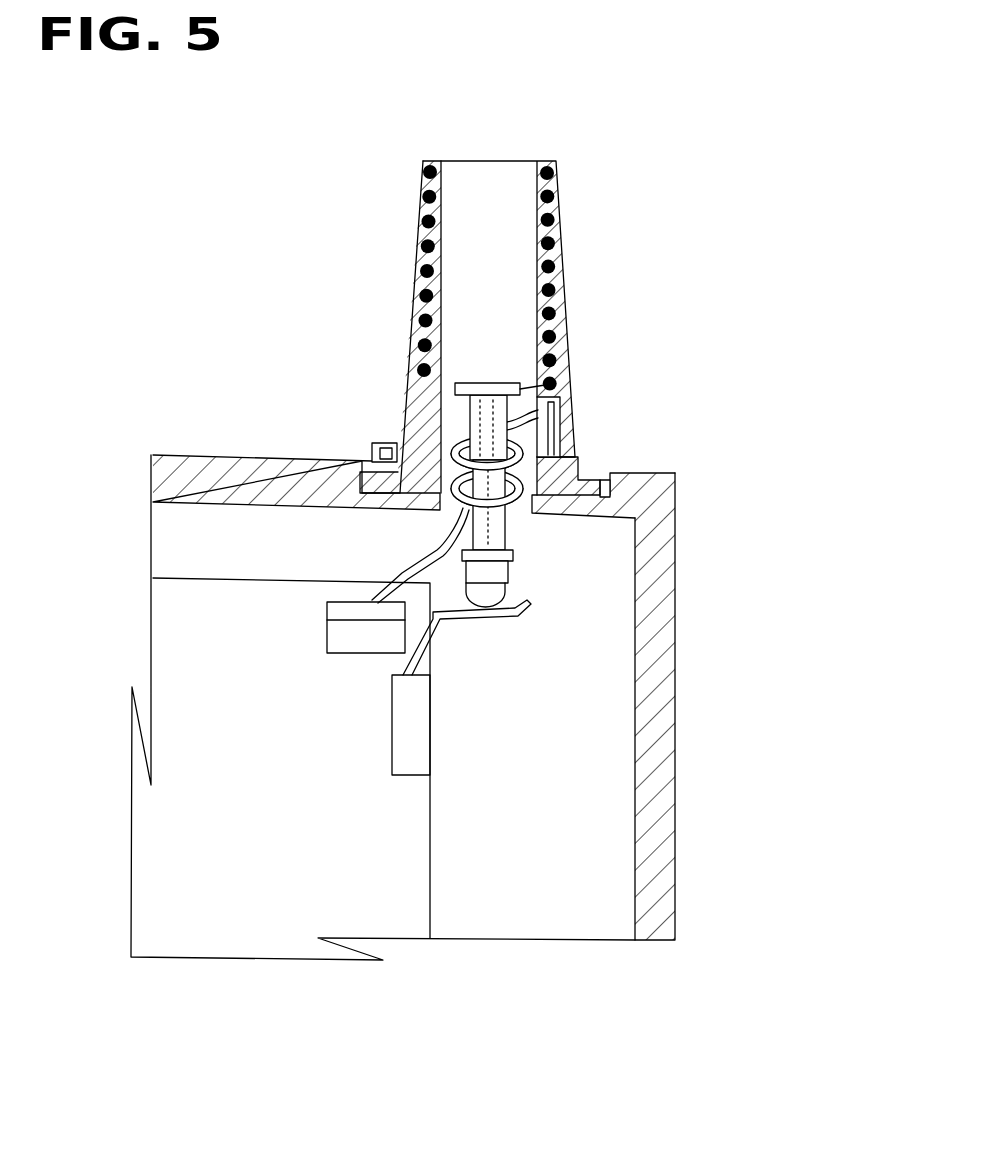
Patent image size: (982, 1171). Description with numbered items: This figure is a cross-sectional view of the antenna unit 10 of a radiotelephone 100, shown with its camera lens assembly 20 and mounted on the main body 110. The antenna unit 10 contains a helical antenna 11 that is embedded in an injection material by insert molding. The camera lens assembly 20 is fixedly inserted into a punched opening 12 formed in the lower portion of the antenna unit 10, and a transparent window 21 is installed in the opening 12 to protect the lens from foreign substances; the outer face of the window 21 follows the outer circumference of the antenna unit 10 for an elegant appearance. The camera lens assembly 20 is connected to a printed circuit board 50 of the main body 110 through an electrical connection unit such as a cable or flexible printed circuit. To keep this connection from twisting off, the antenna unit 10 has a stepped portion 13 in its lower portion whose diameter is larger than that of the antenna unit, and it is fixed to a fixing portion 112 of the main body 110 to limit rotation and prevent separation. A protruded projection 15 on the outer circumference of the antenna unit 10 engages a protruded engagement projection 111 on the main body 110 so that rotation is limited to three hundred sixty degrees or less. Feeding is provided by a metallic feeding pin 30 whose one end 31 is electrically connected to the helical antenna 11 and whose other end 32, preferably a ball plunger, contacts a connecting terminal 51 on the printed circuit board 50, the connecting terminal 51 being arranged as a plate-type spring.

The antenna unit 10 is at (572, 272).
The helical antenna 11 is at (420, 218).
The protruded projection 15 is at (387, 443).
The protruded engagement projection 111 is at (370, 447).
The one end of the feeding pin 31 is at (493, 382).
The transparent window 21 is at (560, 405).
The camera lens assembly 20 is at (577, 424).
The punched opening 12 is at (575, 456).
The radiotelephone 100 is at (486, 553).
The fixing portion 112 is at (612, 483).
The stepped portion 13 is at (600, 522).
The main body 110 is at (678, 742).
The feeding pin 30 is at (510, 530).
The other end of the feeding pin 32 is at (508, 592).
The connecting terminal 51 is at (502, 618).
The printed circuit board 50 is at (295, 814).